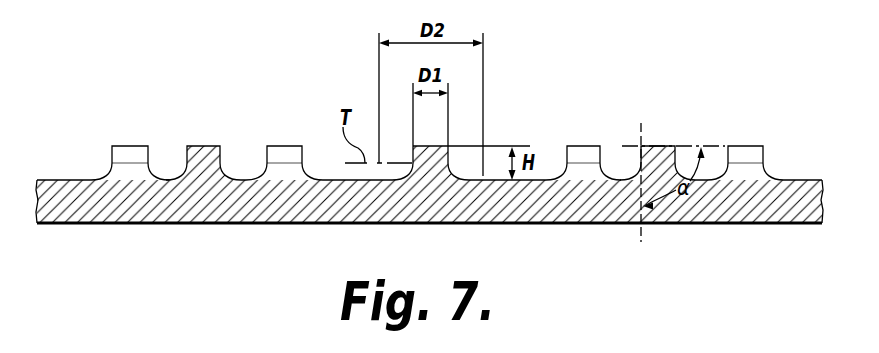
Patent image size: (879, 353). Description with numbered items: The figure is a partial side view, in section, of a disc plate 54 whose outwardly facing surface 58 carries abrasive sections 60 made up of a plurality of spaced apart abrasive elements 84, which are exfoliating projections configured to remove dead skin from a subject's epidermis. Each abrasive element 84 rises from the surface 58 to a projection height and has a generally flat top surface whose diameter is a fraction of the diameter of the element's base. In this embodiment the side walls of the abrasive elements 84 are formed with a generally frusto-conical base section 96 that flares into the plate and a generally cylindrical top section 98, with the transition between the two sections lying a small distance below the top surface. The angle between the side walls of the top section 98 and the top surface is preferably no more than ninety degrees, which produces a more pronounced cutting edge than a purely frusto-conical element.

The disc plate 54 is at (80, 214).
The outwardly facing surface 58 is at (56, 180).
The abrasive sections 60 is at (437, 143).
The abrasive elements 84 is at (130, 145).
The frusto-conical base section 96 is at (411, 172).
The cylindrical top section 98 is at (448, 148).